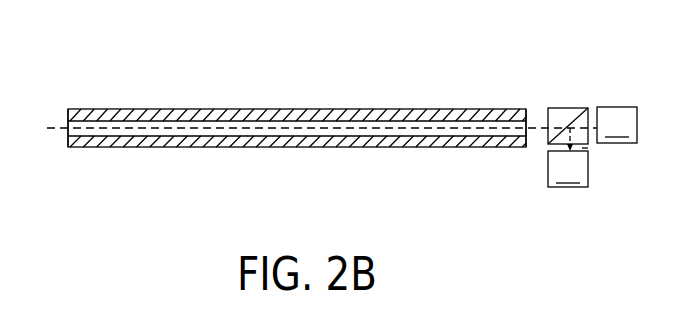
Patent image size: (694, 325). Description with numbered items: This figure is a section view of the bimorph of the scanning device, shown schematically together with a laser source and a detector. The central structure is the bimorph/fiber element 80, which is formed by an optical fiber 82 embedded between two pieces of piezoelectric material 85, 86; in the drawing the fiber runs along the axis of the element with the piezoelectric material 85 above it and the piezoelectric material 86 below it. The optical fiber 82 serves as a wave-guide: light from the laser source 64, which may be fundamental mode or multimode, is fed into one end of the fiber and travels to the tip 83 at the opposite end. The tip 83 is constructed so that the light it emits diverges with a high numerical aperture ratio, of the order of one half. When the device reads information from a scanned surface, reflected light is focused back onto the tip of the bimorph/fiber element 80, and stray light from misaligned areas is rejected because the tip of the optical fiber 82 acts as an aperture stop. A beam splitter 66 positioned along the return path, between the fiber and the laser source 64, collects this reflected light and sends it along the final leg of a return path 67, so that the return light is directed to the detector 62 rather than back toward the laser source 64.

The bimorph/fiber element 80 is at (289, 93).
The piezoelectric material 85 is at (462, 108).
The piezoelectric material 86 is at (293, 148).
The optical fiber 82 is at (526, 108).
The tip 83 is at (68, 131).
The beam splitter 66 is at (548, 139).
The laser source 64 is at (617, 125).
The detector 62 is at (568, 169).
The final leg of a return path 67 is at (592, 148).